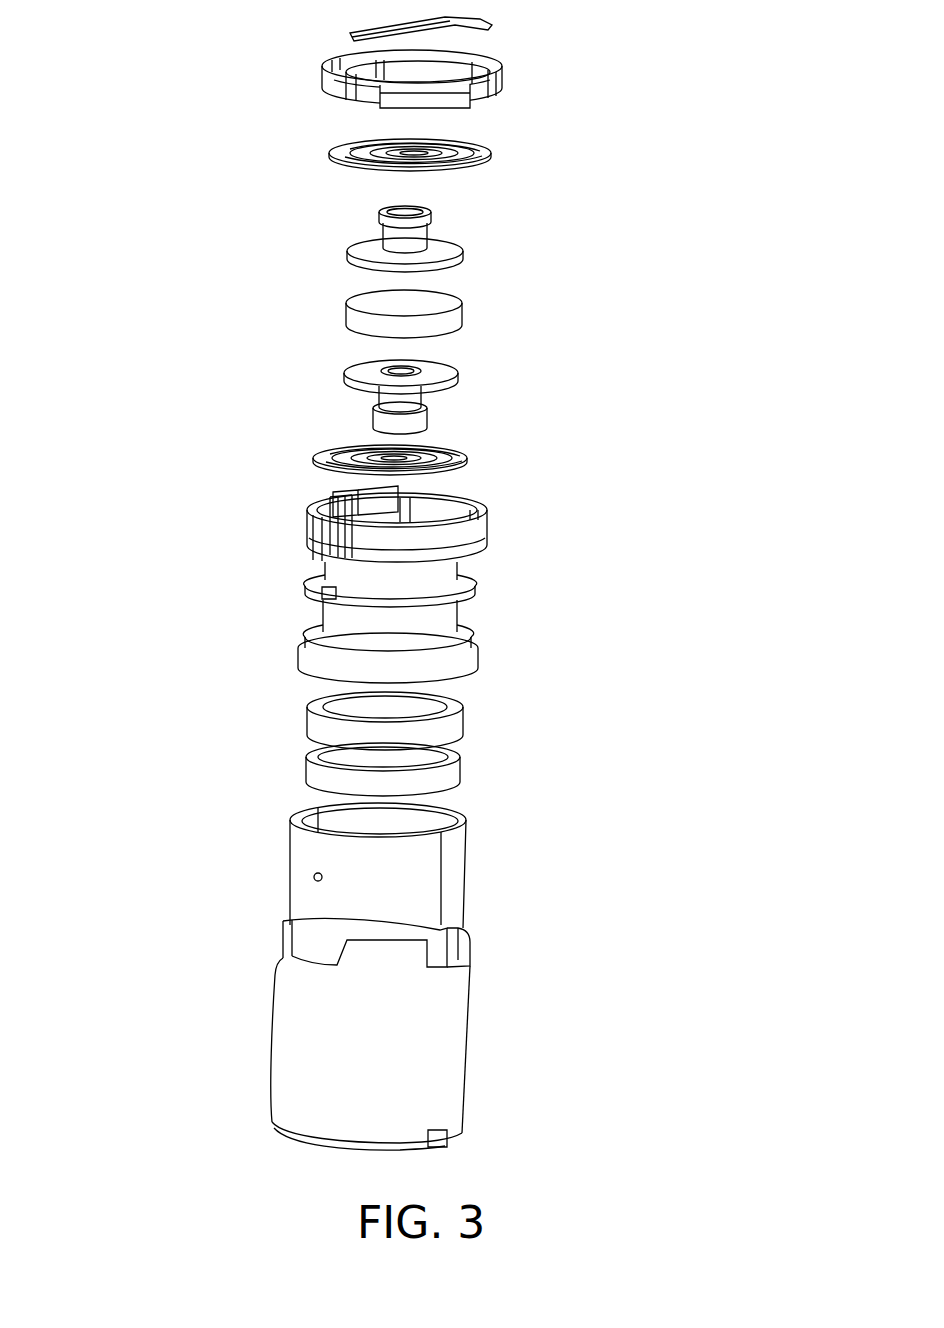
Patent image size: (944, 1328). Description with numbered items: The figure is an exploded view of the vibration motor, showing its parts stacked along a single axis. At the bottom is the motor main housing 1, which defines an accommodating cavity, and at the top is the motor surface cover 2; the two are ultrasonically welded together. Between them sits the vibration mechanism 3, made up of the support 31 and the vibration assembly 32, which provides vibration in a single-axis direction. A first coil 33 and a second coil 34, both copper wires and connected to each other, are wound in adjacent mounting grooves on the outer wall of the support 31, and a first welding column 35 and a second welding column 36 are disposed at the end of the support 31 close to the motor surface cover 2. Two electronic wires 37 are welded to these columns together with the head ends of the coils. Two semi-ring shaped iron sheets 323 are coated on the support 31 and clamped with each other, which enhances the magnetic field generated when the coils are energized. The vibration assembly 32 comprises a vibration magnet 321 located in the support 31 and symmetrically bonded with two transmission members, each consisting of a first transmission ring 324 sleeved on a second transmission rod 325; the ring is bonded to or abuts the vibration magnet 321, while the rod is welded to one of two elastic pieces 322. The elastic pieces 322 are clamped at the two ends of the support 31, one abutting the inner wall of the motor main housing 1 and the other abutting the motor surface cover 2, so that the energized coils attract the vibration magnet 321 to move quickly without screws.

The motor main housing 1 is at (320, 1067).
The motor surface cover 2 is at (325, 77).
The vibration mechanism 3 is at (230, 850).
The support 31 is at (310, 525).
The vibration assembly 32 is at (680, 225).
The vibration magnet 321 is at (453, 322).
The elastic pieces 322 is at (490, 155).
The iron sheets 323 is at (373, 840).
The first transmission ring 324 is at (460, 263).
The second transmission rod 325 is at (433, 222).
The first coil 33 is at (313, 715).
The second coil 34 is at (313, 762).
The first welding column 35 is at (353, 497).
The second welding column 36 is at (333, 495).
The electronic wires 37 is at (482, 30).